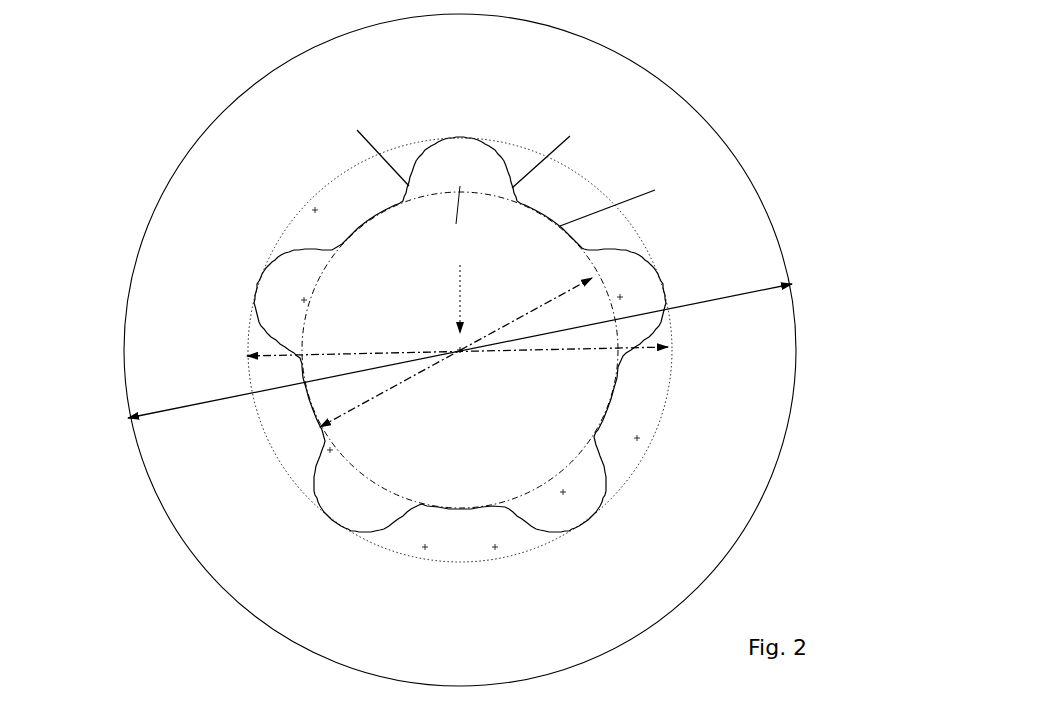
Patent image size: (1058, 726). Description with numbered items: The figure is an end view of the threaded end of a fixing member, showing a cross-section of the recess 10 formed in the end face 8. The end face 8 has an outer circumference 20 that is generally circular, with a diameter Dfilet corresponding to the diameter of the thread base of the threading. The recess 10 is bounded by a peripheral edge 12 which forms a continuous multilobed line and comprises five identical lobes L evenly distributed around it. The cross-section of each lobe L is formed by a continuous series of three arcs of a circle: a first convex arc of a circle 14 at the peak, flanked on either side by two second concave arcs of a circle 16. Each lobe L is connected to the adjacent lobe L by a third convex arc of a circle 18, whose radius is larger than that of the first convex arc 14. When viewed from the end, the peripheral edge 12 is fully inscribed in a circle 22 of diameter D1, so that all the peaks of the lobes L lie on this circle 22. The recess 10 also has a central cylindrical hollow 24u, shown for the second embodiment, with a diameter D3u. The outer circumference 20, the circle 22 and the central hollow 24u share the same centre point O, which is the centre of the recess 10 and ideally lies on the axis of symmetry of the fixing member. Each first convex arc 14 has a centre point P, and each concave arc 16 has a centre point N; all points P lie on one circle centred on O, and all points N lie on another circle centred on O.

The end face 8 is at (498, 350).
The recess 10 is at (582, 387).
The peripheral edge 12 is at (602, 487).
The first convex arc of a circle 14 is at (482, 136).
The second concave arcs of a circle 16 is at (464, 146).
The third convex arc of a circle 18 is at (621, 196).
The outer circumference 20 is at (243, 96).
The circle 22 is at (478, 561).
The central cylindrical hollow 24u is at (348, 458).
The centre point N is at (316, 210).
The lobe L is at (258, 280).
The centre point P is at (450, 259).
The centre point O is at (446, 340).
The diameter D1 is at (457, 341).
The diameter D3u is at (456, 347).
The diameter Dfilet is at (460, 351).